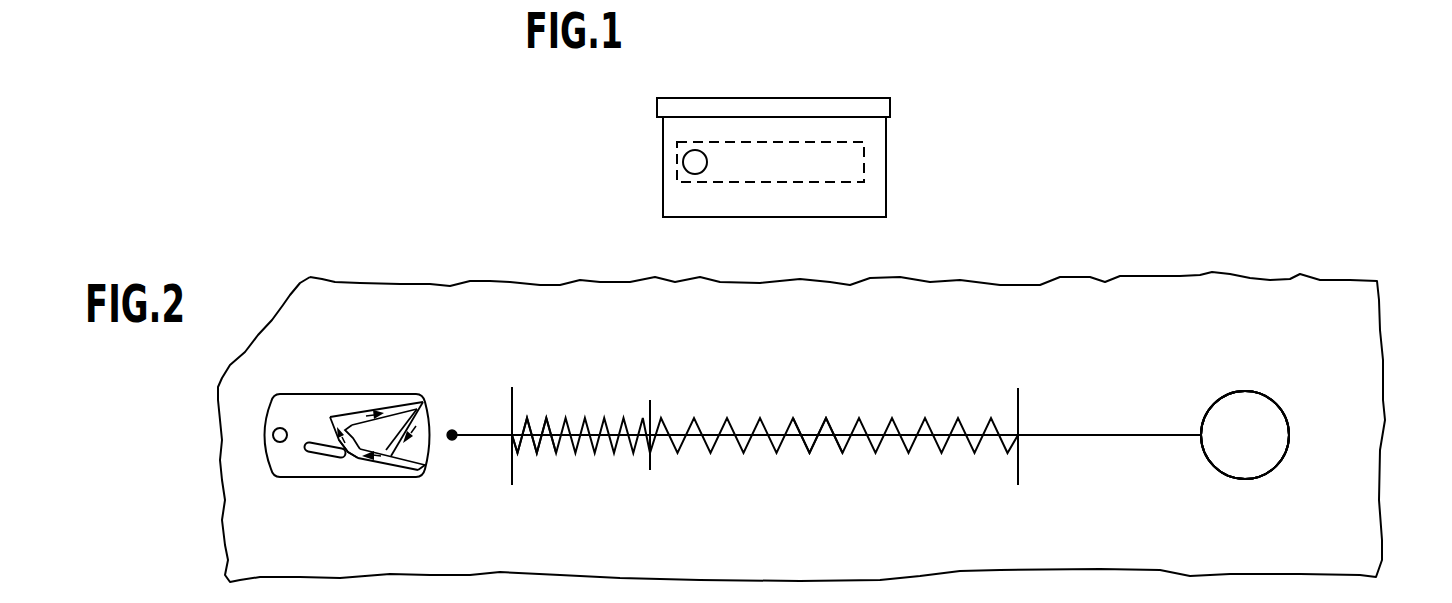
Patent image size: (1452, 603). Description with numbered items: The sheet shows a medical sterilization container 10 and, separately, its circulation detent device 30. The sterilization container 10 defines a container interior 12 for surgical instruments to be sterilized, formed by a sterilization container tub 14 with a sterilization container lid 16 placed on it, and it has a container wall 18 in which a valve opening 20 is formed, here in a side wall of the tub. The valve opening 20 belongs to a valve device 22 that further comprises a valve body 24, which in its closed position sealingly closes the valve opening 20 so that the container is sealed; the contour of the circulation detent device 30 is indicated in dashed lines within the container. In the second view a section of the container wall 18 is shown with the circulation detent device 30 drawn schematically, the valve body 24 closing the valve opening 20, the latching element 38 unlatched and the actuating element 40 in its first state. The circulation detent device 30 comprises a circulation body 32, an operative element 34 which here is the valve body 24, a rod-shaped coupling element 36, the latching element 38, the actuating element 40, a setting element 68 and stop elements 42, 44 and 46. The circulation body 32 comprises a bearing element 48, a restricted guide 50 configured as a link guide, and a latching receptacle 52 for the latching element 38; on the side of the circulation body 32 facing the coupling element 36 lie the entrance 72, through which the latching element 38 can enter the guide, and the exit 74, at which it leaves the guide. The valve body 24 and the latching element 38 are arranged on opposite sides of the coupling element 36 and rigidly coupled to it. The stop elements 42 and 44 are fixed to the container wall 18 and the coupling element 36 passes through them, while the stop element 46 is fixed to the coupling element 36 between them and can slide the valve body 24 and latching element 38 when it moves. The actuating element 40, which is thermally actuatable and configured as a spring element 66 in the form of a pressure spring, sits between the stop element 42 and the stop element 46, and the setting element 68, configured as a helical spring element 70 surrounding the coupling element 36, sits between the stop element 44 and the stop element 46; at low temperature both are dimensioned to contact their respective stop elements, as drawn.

In FIG. 1, the sterilization container 10 is at (821, 63).
In FIG. 1, the container interior 12 is at (872, 203).
In FIG. 1, the sterilization container tub 14 is at (686, 199).
In FIG. 1, the sterilization container lid 16 is at (760, 88).
In FIG. 1, the container wall 18 is at (793, 198).
In FIG. 2, the container wall 18 is at (1350, 525).
In FIG. 1, the valve opening 20 is at (684, 158).
In FIG. 2, the valve device 22 is at (1259, 368).
In FIG. 2, the valve body 24 is at (1223, 410).
In FIG. 1, the circulation detent device 30 is at (866, 156).
In FIG. 2, the circulation detent device 30 is at (1272, 381).
In FIG. 2, the circulation body 32 is at (266, 484).
In FIG. 2, the operative element 34 is at (1255, 457).
In FIG. 2, the coupling element 36 is at (1053, 436).
In FIG. 2, the latching element 38 is at (453, 443).
In FIG. 2, the actuating element 40 is at (748, 447).
In FIG. 2, the stop element 42 is at (1018, 398).
In FIG. 2, the stop element 44 is at (512, 390).
In FIG. 2, the stop element 46 is at (650, 405).
In FIG. 2, the bearing element 48 is at (272, 436).
In FIG. 2, the restricted guide 50 is at (352, 455).
In FIG. 2, the latching receptacle 52 is at (342, 447).
In FIG. 2, the spring element 66 is at (815, 445).
In FIG. 2, the setting element 68 is at (538, 446).
In FIG. 2, the spring element 70 is at (583, 444).
In FIG. 2, the entrance 72 is at (400, 463).
In FIG. 2, the exit 74 is at (424, 403).